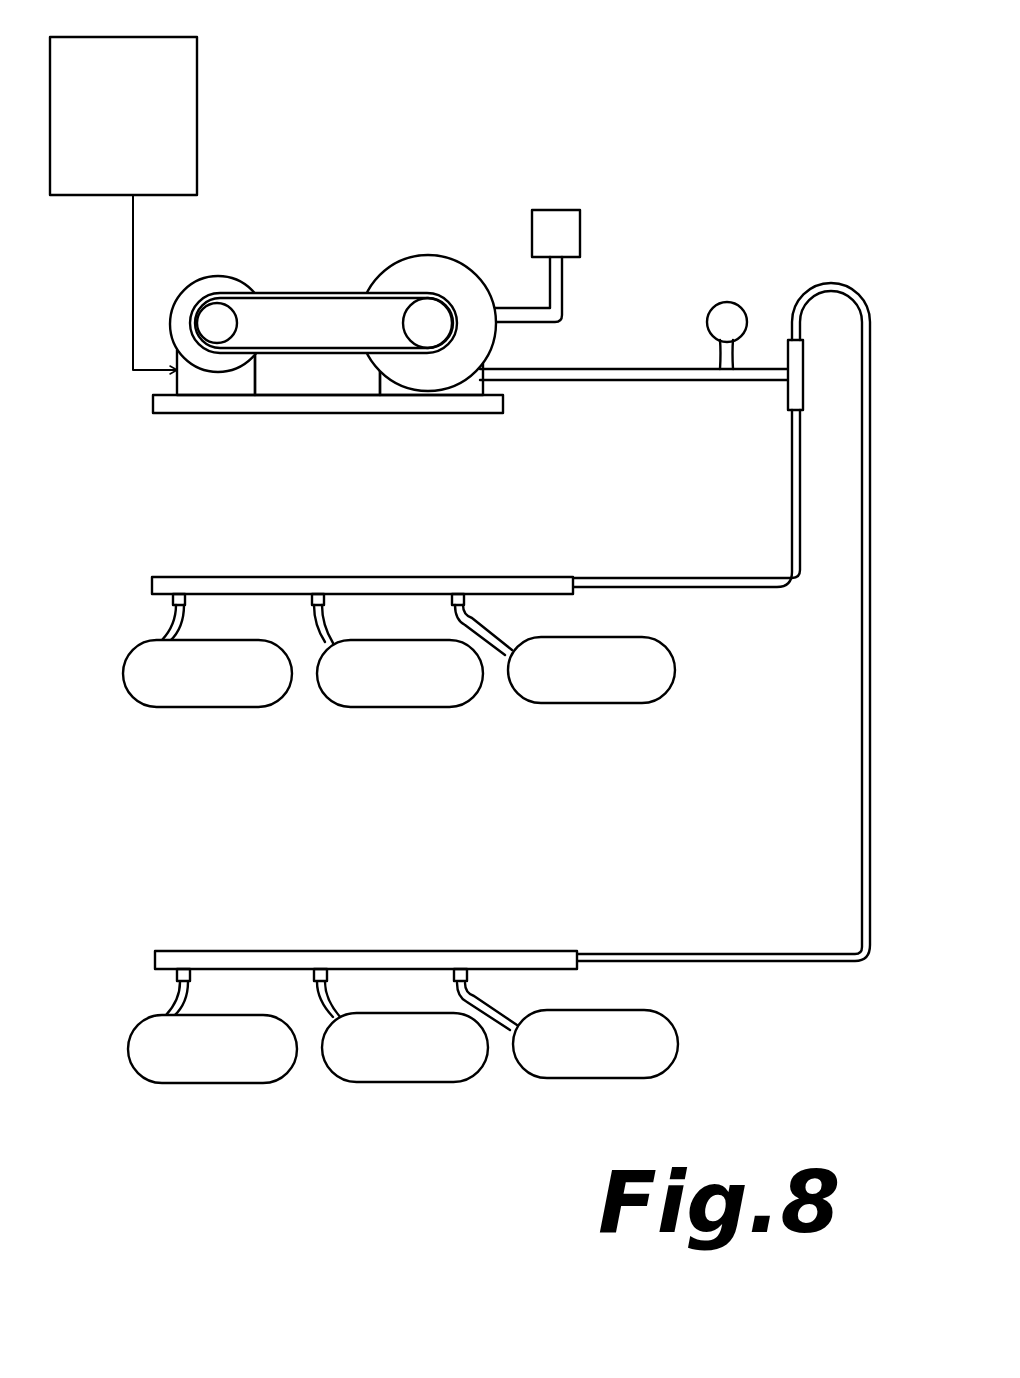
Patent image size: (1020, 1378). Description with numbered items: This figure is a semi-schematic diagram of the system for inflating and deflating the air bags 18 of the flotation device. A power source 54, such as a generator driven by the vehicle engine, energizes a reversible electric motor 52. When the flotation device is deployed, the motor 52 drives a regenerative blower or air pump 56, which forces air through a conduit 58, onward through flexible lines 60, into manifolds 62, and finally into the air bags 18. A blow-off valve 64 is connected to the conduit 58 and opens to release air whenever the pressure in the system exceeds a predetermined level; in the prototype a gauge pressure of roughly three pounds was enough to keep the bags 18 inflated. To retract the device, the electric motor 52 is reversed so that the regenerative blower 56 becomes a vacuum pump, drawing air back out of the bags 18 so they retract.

The power source 54 is at (190, 50).
The reversible electric motor 52 is at (227, 287).
The regenerative blower or air pump 56 is at (447, 267).
The conduit 58 is at (627, 369).
The blow-off valve 64 is at (735, 305).
The flexible lines 60 is at (690, 540).
The manifolds 62 is at (330, 583).
The air bags 18 is at (162, 697).